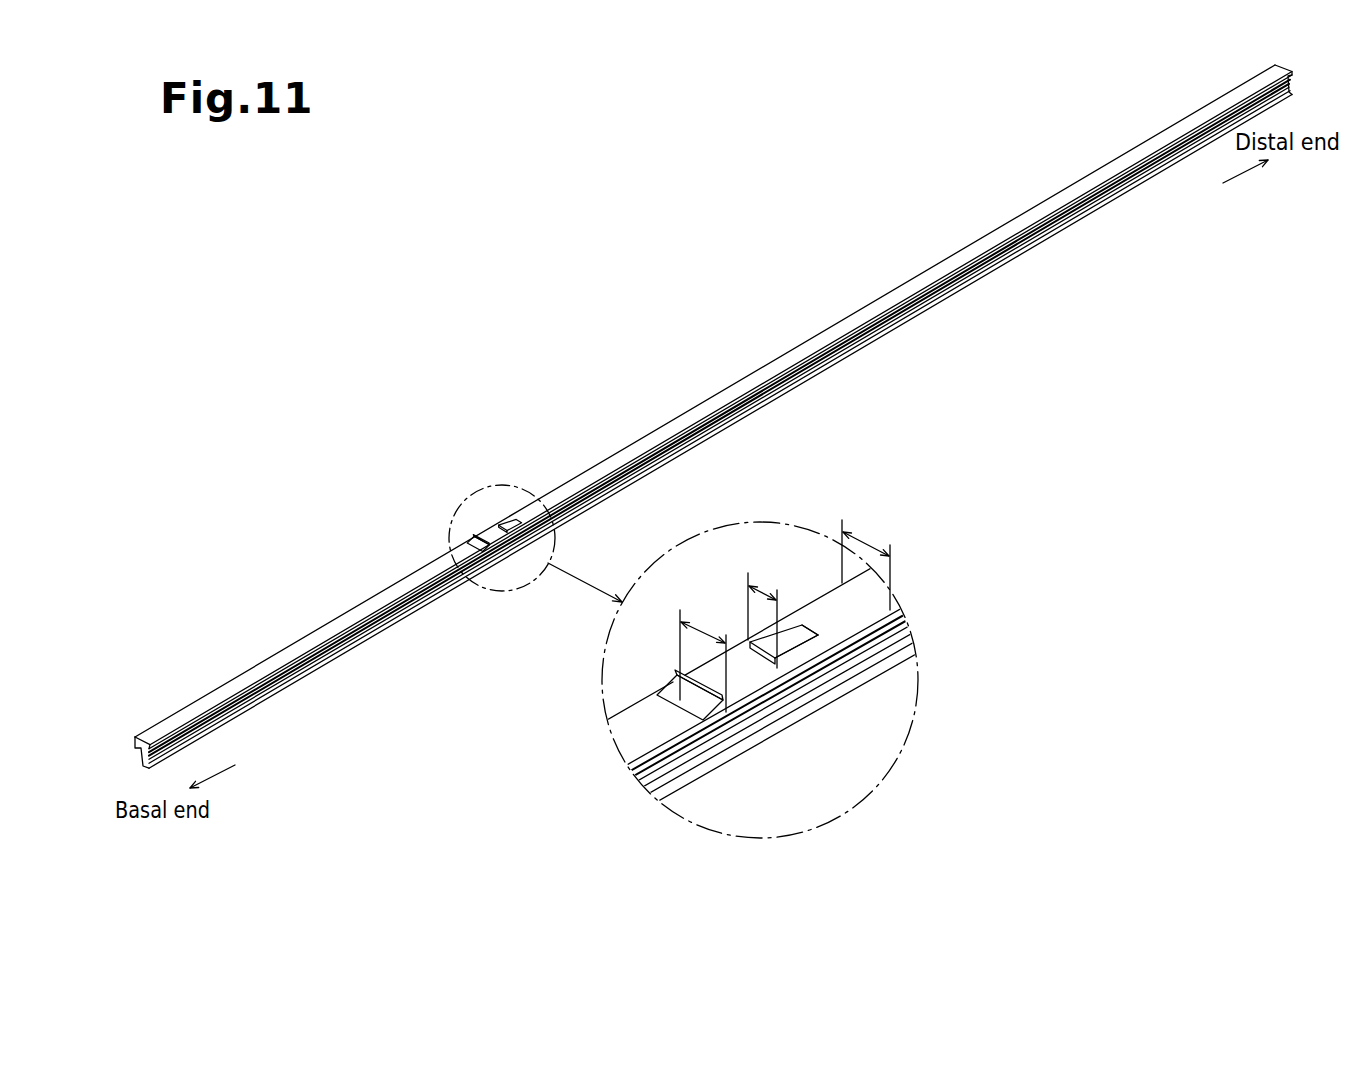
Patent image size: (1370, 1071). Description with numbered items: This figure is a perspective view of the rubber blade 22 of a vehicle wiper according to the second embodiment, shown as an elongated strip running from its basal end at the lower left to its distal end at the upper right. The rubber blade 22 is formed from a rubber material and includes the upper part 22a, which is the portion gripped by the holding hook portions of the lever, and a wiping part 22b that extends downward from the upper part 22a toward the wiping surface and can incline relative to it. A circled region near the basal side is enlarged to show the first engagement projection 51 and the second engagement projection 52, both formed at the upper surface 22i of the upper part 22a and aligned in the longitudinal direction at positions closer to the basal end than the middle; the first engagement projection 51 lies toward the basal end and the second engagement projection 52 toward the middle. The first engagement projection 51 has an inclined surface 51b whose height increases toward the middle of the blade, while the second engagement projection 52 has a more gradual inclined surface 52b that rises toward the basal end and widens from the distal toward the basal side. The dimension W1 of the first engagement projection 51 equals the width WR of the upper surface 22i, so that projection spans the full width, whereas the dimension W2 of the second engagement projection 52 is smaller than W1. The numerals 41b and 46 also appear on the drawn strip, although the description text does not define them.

The rubber blade 22 is at (352, 613).
The upper part 22a is at (309, 648).
The wiping part 22b is at (278, 687).
The upper surface 22i is at (828, 605).
The backing member 41b is at (711, 410).
The backing strip 46 is at (818, 703).
The first engagement projection 51 is at (671, 670).
The inclined surface 51b is at (680, 692).
The second engagement projection 52 is at (748, 642).
The inclined surface 52b is at (805, 632).
The dimension in the widthwise direction of the first engagement projection W1 is at (682, 622).
The dimension in the widthwise direction of the second engagement projection W2 is at (754, 594).
The dimension in the widthwise direction of the upper surface WR is at (849, 539).